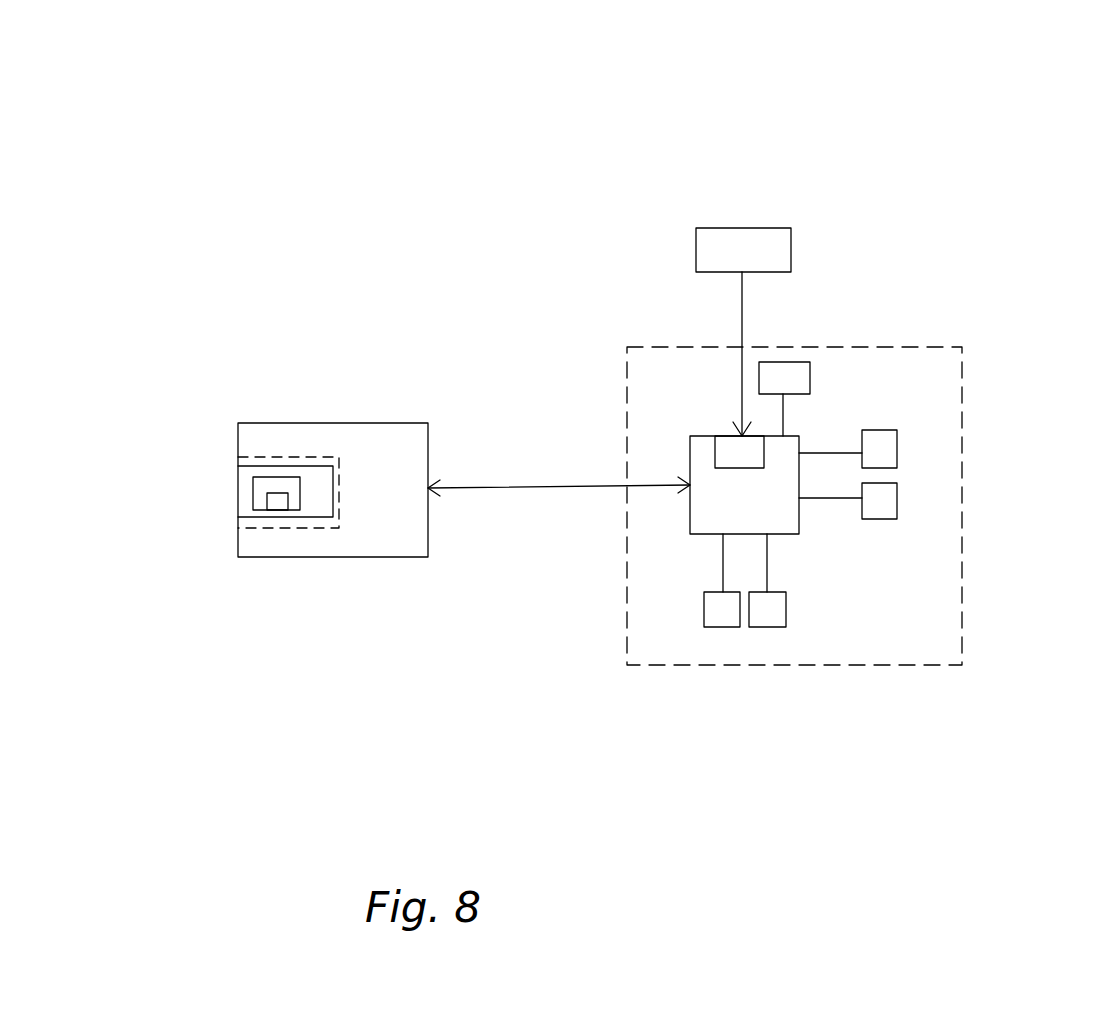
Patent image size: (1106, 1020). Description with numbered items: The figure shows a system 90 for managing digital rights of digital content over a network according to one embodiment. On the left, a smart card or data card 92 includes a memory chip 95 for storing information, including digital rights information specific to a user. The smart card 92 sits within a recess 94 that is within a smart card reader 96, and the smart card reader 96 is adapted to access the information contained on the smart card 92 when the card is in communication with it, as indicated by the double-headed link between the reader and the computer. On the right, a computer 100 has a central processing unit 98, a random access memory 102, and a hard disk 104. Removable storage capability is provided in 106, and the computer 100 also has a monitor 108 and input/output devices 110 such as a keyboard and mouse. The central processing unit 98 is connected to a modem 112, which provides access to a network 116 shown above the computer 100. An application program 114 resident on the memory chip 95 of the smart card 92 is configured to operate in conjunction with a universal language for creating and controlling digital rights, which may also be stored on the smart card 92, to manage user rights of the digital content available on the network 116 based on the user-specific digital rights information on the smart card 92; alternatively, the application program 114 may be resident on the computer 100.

The RFID system 90 is at (970, 59).
The smart card 92 is at (248, 488).
The recess 94 is at (340, 467).
The memory chip 95 is at (300, 493).
The smart card reader 96 is at (302, 423).
The central processing unit 98 is at (744, 485).
The computer 100 is at (963, 440).
The random access memory 102 is at (810, 375).
The hard disk 104 is at (897, 445).
The removable storage 106 is at (897, 502).
The monitor 108 is at (786, 605).
The input/output devices 110 is at (704, 610).
The modem 112 is at (739, 452).
The application program 114 is at (274, 503).
The network 116 is at (791, 245).